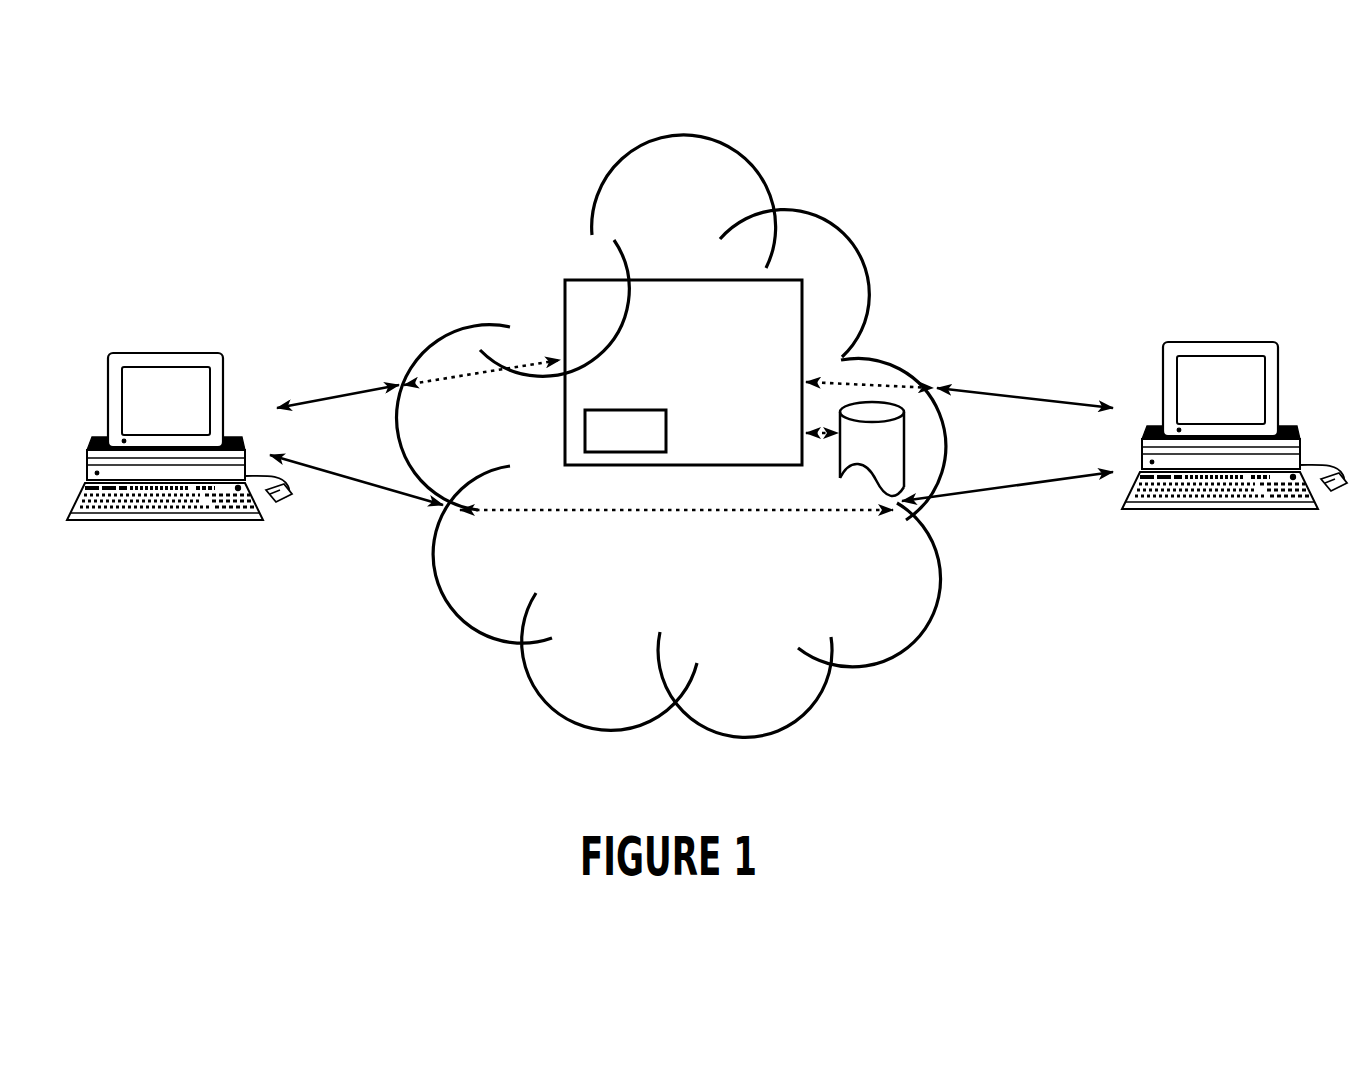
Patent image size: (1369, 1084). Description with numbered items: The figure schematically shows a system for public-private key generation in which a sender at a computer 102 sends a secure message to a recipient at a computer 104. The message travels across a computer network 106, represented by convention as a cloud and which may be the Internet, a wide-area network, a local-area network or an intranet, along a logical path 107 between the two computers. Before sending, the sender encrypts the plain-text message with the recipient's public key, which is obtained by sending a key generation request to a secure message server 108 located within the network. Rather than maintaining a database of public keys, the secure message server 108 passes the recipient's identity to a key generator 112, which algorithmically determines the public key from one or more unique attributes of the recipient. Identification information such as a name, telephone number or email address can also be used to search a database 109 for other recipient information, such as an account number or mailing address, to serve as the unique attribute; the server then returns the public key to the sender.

The computer 102 is at (147, 345).
The computer 104 is at (1205, 334).
The computer network 106 is at (843, 216).
The logical path 107 is at (673, 518).
The secure message server 108 is at (683, 276).
The database 109 is at (914, 441).
The key generator 112 is at (621, 458).